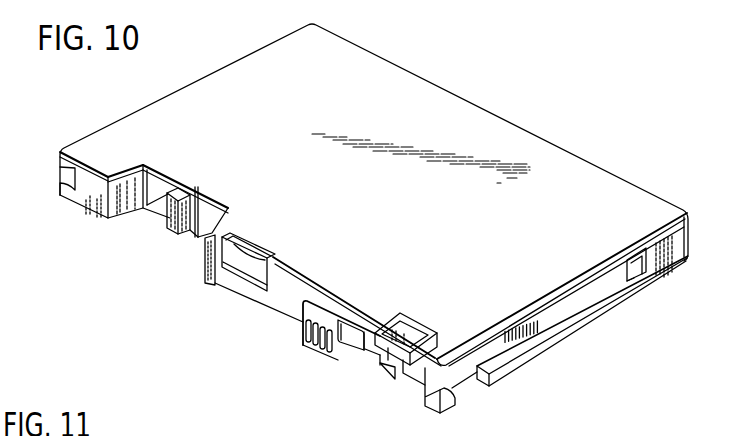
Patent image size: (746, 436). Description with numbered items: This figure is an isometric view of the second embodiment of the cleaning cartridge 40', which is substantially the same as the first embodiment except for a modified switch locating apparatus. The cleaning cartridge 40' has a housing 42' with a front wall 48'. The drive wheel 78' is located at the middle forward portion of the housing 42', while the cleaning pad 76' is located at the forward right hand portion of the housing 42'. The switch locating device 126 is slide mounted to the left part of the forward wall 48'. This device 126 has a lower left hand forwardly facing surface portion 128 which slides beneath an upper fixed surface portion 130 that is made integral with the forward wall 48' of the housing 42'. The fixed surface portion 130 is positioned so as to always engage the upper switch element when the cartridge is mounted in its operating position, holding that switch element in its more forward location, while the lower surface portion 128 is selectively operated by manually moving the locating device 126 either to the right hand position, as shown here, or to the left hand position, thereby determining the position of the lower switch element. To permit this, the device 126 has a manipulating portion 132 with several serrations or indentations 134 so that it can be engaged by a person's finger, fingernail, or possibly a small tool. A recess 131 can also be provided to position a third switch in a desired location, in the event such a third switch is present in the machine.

The cleaning cartridge 40' is at (50, 231).
The housing 42' is at (374, 195).
The cleaning pad 76' is at (132, 231).
The drive wheel 78' is at (210, 273).
The front wall 48' is at (307, 318).
The manipulating portion 132 is at (303, 312).
The serrations or indentations 134 is at (312, 342).
The switch locating device 126 is at (325, 360).
The lower left hand forwardly facing surface portion 128 is at (350, 362).
The upper fixed surface portion 130 is at (388, 358).
The recess 131 is at (407, 350).